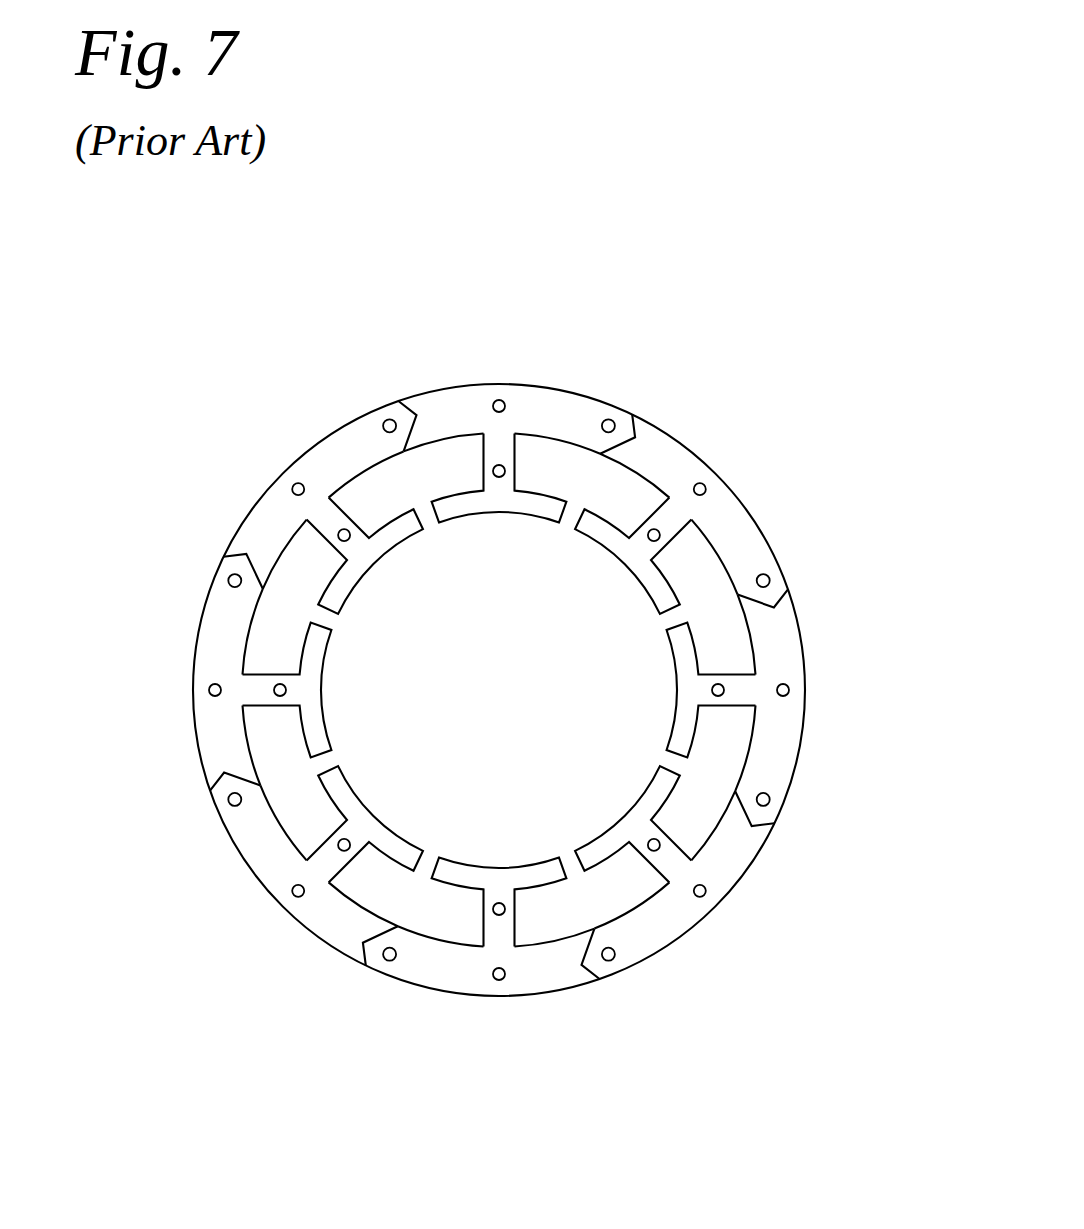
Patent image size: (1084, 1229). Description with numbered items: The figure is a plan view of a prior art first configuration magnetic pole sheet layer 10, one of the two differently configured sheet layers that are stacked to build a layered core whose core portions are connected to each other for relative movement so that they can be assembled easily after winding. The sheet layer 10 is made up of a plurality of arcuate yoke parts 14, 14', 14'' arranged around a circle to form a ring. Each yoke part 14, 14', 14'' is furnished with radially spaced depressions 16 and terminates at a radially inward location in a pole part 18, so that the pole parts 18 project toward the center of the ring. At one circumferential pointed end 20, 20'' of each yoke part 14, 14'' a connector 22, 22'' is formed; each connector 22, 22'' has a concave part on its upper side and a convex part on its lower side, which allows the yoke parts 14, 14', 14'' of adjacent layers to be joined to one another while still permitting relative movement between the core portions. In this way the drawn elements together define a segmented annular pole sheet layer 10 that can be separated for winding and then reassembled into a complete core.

The first configuration magnetic pole sheet layer 10 is at (783, 575).
The arcuate yoke part 14 is at (490, 687).
The arcuate yoke part 14' is at (496, 1005).
The arcuate yoke part 14'' is at (164, 765).
The depression 16 is at (500, 465).
The pole part 18 is at (496, 513).
The circumferential pointed end 20 is at (490, 687).
The circumferential pointed end 20'' is at (162, 777).
The connector 22 is at (490, 687).
The connector 22'' is at (153, 829).